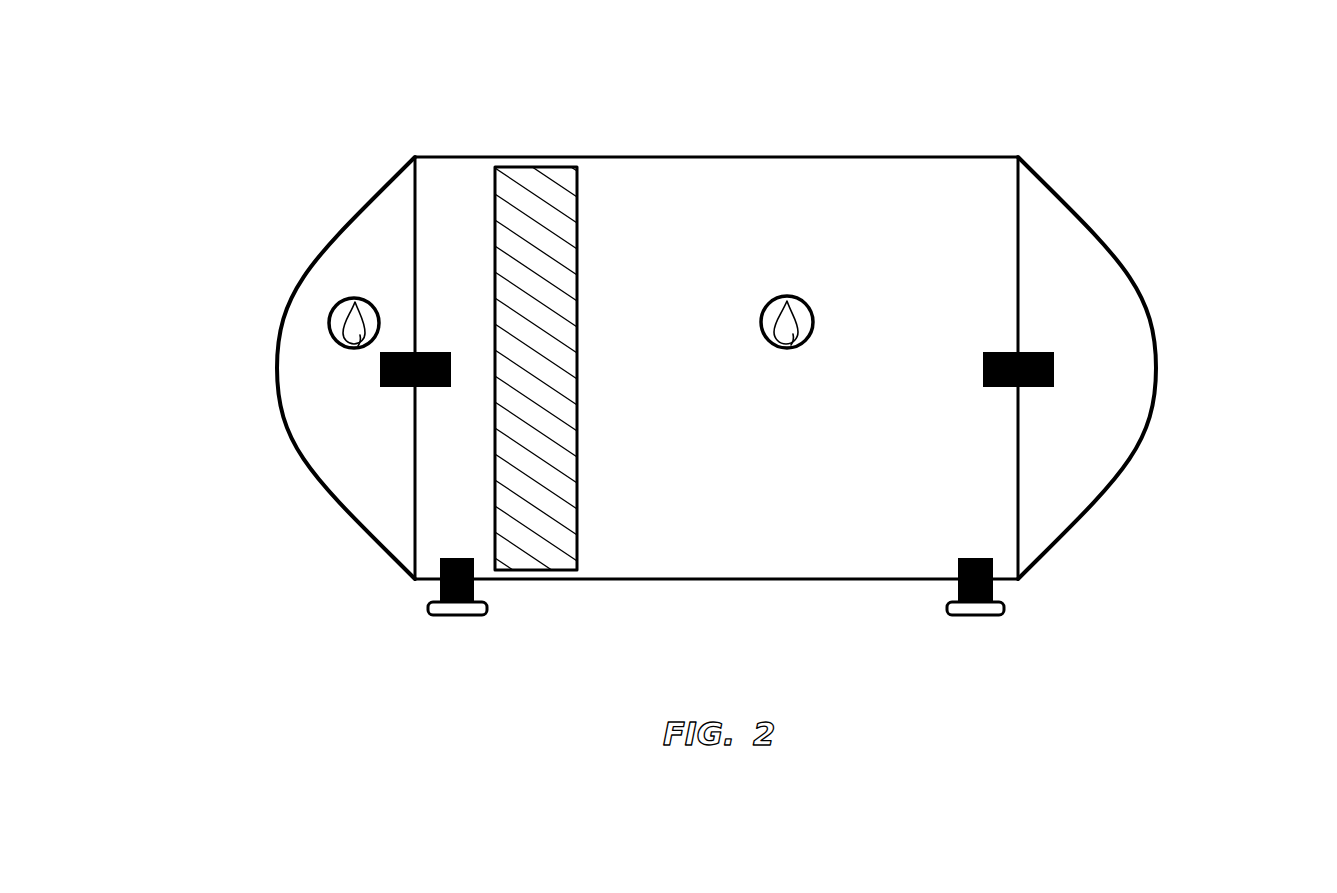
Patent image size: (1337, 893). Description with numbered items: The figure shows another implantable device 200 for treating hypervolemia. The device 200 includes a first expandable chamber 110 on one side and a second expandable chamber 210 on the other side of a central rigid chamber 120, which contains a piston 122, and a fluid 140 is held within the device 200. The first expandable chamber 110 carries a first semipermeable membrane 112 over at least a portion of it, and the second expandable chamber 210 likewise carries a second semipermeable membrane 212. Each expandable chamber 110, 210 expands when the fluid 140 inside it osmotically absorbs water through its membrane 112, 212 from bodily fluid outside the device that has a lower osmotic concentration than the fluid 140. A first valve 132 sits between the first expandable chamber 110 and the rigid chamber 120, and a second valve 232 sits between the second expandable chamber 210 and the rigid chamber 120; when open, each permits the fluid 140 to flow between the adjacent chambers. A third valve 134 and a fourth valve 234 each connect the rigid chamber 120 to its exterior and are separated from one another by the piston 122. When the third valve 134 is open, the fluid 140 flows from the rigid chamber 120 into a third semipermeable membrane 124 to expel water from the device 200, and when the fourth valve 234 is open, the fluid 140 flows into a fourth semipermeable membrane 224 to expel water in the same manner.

The implantable device 200 is at (1103, 109).
The first expandable chamber 110 is at (317, 423).
The first semipermeable membrane 112 is at (347, 218).
The rigid chamber 120 is at (951, 221).
The piston 122 is at (533, 535).
The third semipermeable membrane 124 is at (460, 617).
The first valve 132 is at (398, 380).
The third valve 134 is at (457, 588).
The fluid 140 is at (330, 322).
The second expandable chamber 210 is at (1117, 423).
The second semipermeable membrane 212 is at (1085, 220).
The fourth semipermeable membrane 224 is at (978, 615).
The second valve 232 is at (1036, 378).
The fourth valve 234 is at (978, 588).